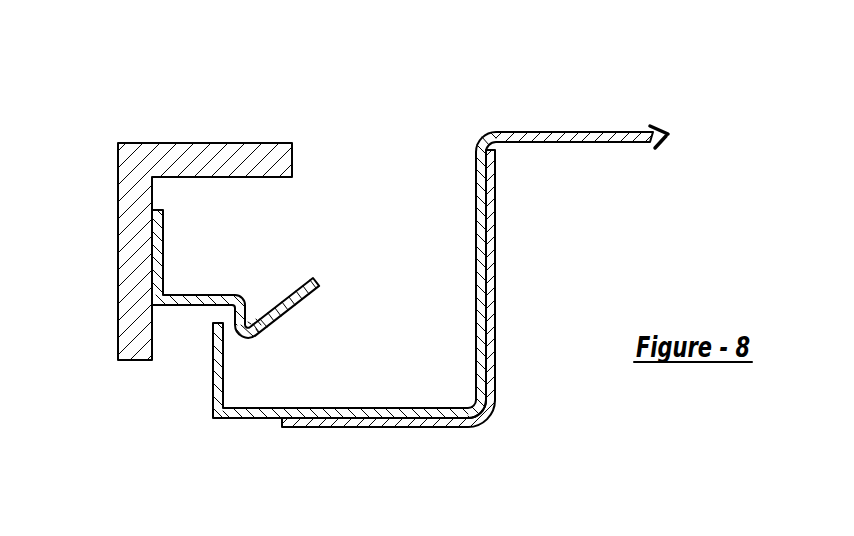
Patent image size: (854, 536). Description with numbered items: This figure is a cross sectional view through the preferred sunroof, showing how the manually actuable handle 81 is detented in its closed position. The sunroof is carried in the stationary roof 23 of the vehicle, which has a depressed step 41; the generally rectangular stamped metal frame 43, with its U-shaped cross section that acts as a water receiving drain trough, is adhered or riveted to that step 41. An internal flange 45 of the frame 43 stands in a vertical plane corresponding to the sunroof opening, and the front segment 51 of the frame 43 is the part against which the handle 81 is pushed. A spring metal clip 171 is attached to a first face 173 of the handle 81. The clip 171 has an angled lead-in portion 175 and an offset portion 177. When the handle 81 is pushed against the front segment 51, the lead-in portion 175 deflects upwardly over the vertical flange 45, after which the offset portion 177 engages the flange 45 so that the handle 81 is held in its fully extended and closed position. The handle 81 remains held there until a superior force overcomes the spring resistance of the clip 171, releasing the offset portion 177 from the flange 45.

The stationary roof 23 is at (590, 131).
The depressed step 41 is at (424, 428).
The frame 43 is at (487, 283).
The internal flange 45 is at (212, 363).
The front segment 51 is at (477, 225).
The handle 81 is at (127, 208).
The spring metal clip 171 is at (197, 296).
The first face 173 is at (153, 193).
The angled lead-in portion 175 is at (293, 306).
The offset portion 177 is at (246, 337).